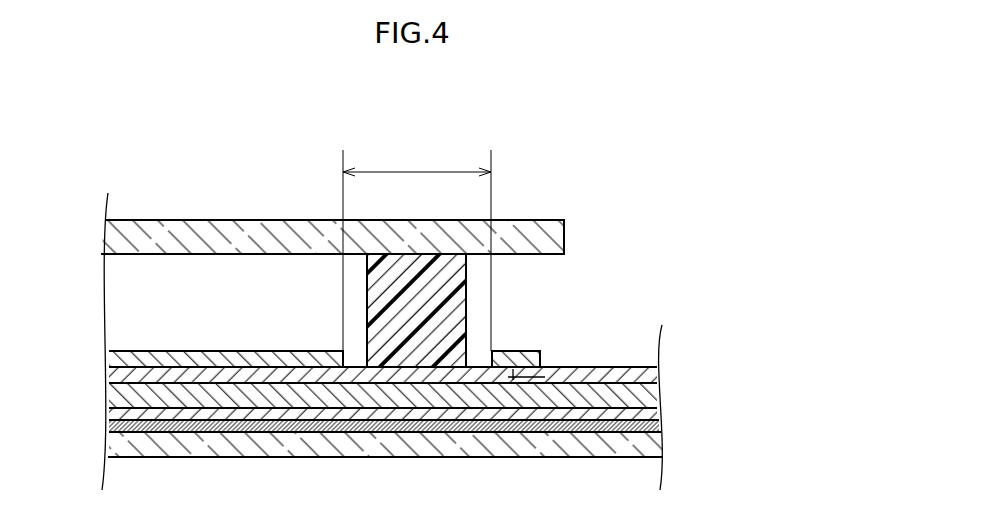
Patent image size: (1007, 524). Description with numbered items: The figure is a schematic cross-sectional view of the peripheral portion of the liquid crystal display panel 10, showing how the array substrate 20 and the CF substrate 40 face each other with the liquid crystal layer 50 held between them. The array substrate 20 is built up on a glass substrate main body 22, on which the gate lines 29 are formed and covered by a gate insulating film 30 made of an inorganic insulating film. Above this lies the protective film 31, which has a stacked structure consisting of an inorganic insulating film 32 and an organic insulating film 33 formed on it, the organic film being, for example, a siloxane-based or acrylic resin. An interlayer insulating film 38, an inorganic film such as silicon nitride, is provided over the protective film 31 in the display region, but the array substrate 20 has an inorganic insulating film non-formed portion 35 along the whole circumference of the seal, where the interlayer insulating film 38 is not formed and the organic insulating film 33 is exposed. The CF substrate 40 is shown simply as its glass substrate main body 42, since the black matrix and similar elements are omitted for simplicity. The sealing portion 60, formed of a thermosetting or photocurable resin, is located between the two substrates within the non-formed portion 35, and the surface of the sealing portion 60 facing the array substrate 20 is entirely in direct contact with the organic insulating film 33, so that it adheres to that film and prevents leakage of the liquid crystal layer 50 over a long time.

The liquid crystal display panel 10 is at (680, 151).
The array substrate 20 is at (93, 350).
The substrate main body 22 is at (643, 444).
The gate lines 29 is at (653, 427).
The gate insulating film 30 is at (653, 415).
The protective film 31 is at (752, 320).
The inorganic insulating film 32 is at (652, 397).
The organic insulating film 33 is at (563, 370).
The inorganic insulating film non-formed portion 35 is at (403, 171).
The interlayer insulating film 38 is at (535, 347).
The CF substrate 40 is at (397, 237).
The substrate main body 42 is at (550, 231).
The liquid crystal layer 50 is at (115, 307).
The sealing portion 60 is at (462, 315).